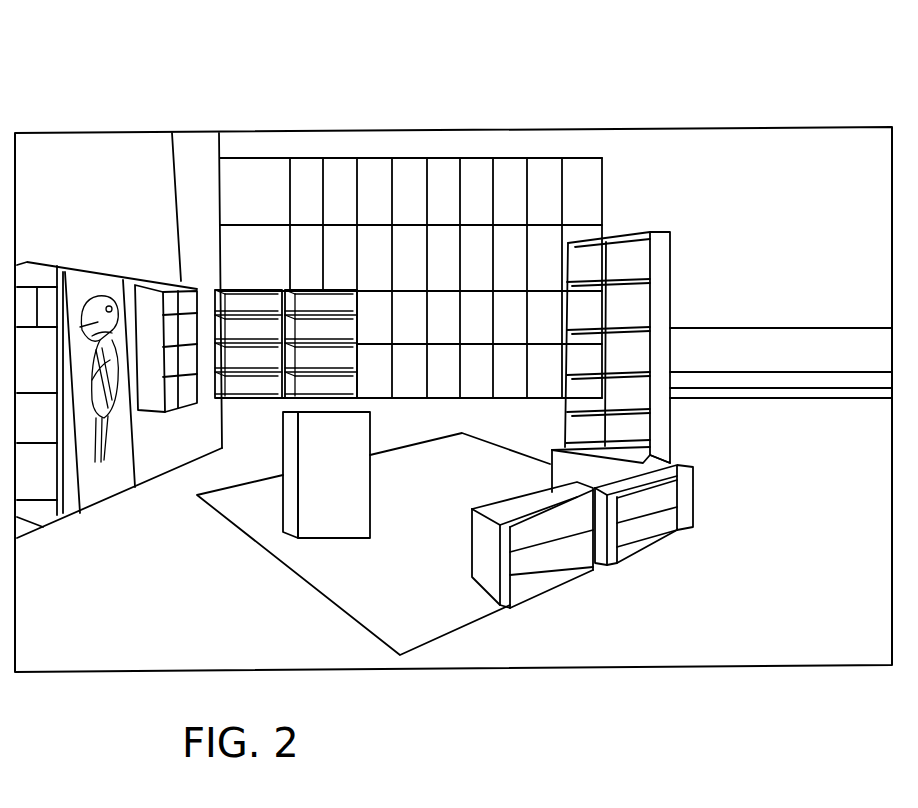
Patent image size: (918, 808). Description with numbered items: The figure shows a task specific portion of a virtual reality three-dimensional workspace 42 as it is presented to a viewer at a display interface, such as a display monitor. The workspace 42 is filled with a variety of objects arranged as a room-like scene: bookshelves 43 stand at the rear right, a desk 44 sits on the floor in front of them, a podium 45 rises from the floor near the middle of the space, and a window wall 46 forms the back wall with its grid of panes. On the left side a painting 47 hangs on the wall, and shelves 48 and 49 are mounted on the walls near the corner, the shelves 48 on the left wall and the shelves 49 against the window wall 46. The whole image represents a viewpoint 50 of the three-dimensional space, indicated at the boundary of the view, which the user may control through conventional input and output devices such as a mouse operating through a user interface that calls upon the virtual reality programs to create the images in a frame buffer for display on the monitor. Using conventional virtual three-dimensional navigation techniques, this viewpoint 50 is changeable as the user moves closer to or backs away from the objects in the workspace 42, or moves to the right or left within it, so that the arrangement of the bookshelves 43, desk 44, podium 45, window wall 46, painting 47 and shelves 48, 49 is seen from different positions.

The workspace 42 is at (582, 618).
The bookshelves 43 is at (662, 270).
The desk 44 is at (627, 560).
The podium 45 is at (337, 500).
The window wall 46 is at (407, 188).
The painting 47 is at (100, 477).
The shelves 48 is at (152, 297).
The shelves 49 is at (262, 303).
The viewpoint 50 is at (450, 670).